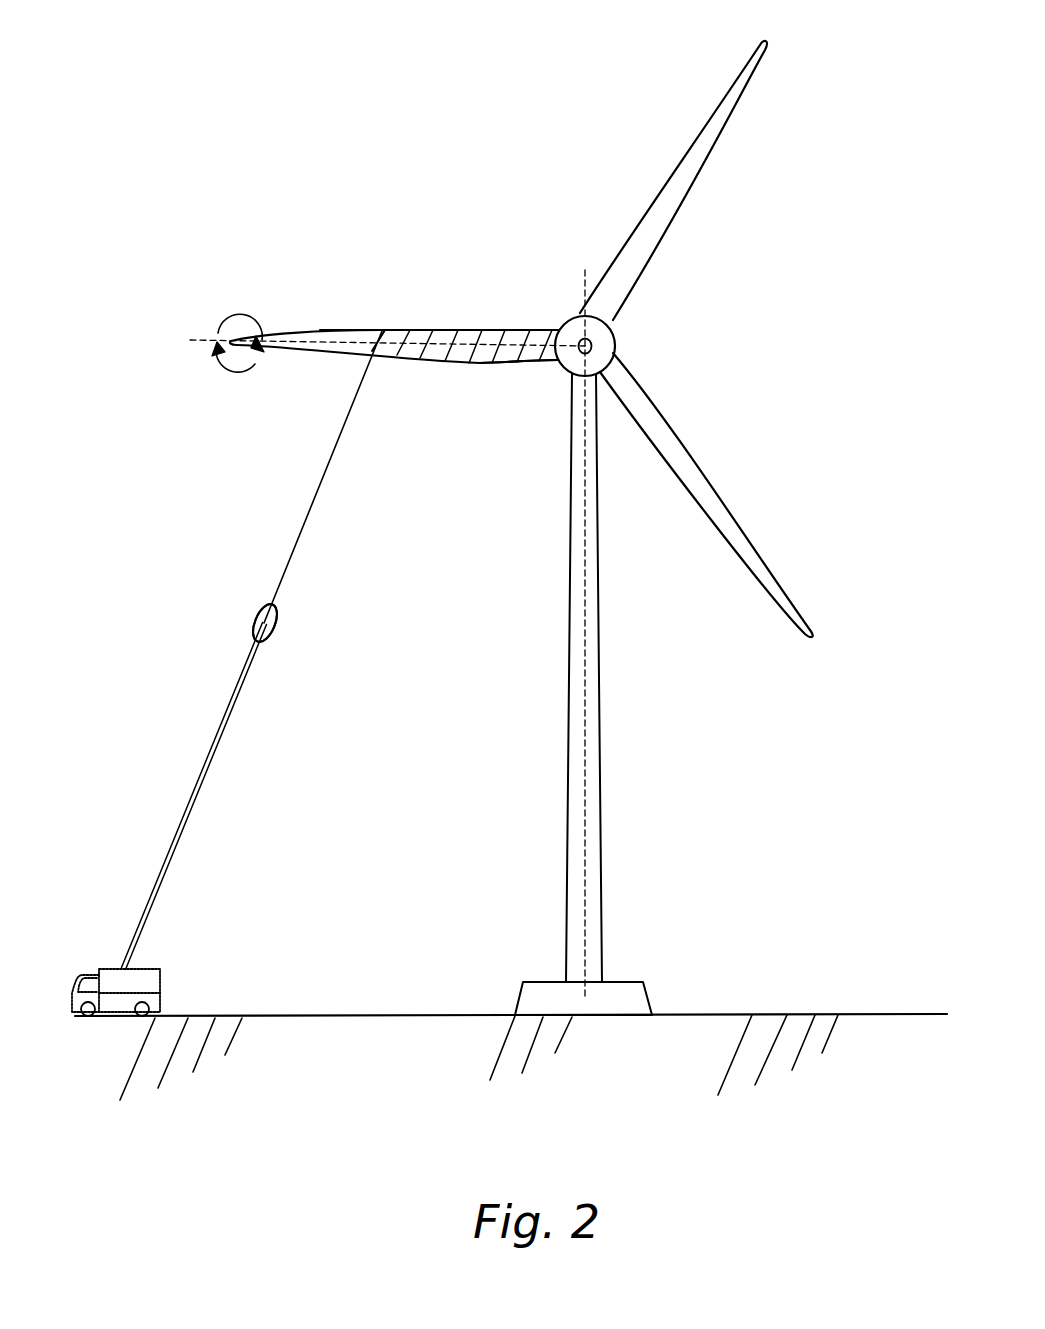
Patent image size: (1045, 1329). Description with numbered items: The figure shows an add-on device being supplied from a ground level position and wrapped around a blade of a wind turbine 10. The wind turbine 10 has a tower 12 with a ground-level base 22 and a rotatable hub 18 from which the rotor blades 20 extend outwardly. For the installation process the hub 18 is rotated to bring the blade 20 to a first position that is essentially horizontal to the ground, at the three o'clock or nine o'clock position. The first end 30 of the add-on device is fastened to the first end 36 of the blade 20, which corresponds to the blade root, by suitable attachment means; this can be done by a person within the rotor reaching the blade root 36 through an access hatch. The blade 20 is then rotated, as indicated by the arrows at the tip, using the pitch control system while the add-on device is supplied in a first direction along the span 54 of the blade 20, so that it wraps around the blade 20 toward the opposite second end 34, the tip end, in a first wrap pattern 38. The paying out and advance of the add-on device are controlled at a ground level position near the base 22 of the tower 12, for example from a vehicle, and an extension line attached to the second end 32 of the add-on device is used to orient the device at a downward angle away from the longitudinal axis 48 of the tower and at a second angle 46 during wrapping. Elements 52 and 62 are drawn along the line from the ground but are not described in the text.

The wind turbine 10 is at (323, 188).
The tower 12 is at (600, 787).
The rotatable hub 18 is at (617, 345).
The rotor blade 20 is at (657, 193).
The ground-level base 22 is at (646, 990).
The first end of the add-on device 30 is at (542, 328).
The second end of the add-on device 32 is at (275, 604).
The second end of the blade 34 is at (224, 340).
The first end of the blade 36 is at (557, 362).
The first wrap pattern 38 is at (434, 335).
The second angle 46 is at (80, 952).
The longitudinal axis of the tower 48 is at (584, 625).
The pulley 52 is at (255, 625).
The span of the blade 54 is at (352, 338).
The guide rope 62 is at (322, 488).